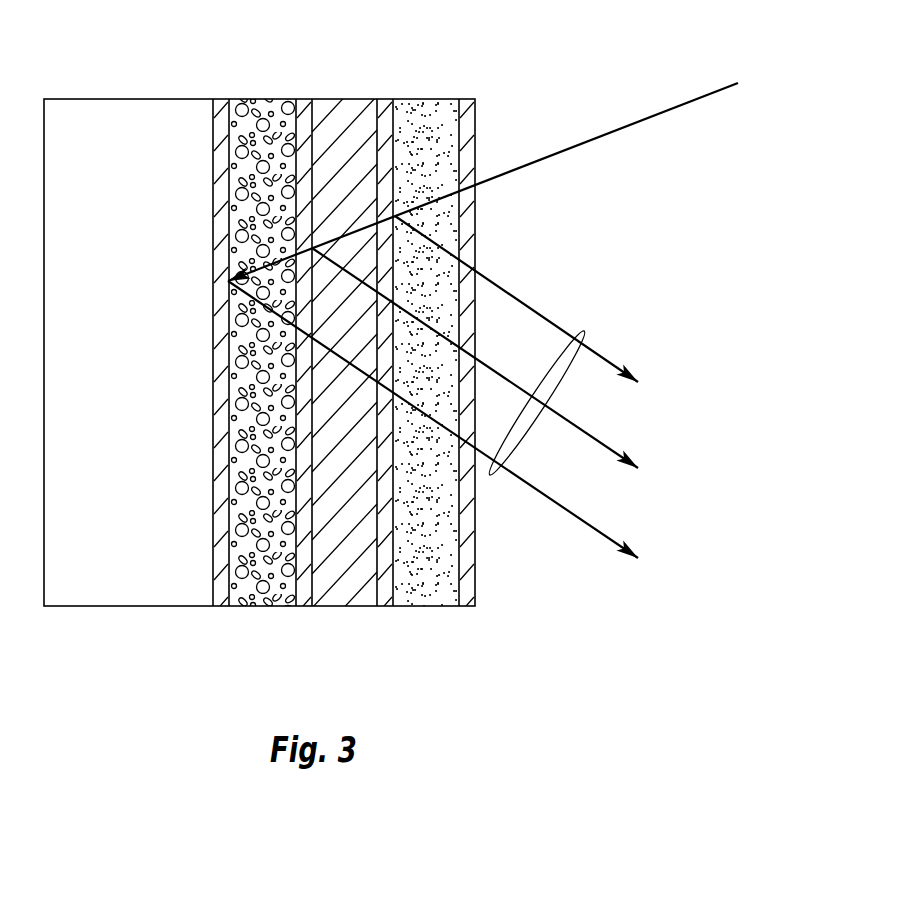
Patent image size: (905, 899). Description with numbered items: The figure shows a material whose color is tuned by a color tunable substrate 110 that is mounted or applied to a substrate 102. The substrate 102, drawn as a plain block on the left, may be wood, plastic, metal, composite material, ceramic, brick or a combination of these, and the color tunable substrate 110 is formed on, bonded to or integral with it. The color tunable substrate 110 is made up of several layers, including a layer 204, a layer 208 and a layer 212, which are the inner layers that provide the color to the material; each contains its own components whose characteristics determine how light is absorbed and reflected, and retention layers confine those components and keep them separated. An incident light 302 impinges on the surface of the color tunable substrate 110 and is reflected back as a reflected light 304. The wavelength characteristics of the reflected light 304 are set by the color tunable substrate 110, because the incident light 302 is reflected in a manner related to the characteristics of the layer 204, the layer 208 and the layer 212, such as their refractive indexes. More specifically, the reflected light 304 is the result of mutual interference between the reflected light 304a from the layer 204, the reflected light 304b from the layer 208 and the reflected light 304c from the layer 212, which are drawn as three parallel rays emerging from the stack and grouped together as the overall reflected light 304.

The substrate 102 is at (128, 99).
The color tunable substrate 110 is at (475, 82).
The layer 204 is at (255, 608).
The layer 208 is at (352, 608).
The layer 212 is at (438, 608).
The incident light 302 is at (612, 128).
The reflected light 304 is at (583, 335).
The reflected light 304a is at (602, 355).
The reflected light 304b is at (602, 441).
The reflected light 304c is at (602, 530).